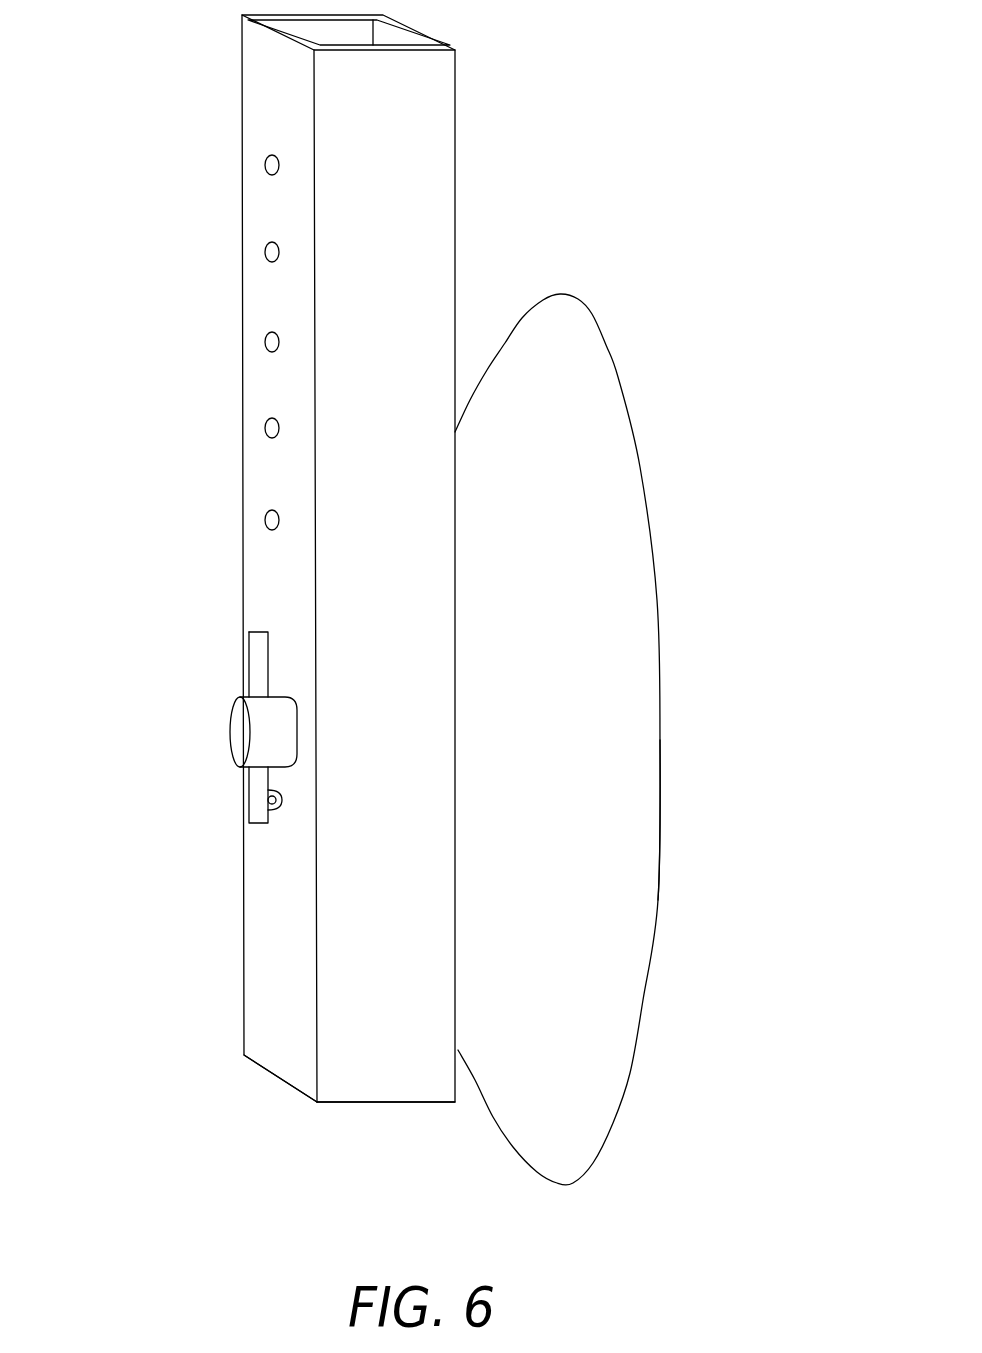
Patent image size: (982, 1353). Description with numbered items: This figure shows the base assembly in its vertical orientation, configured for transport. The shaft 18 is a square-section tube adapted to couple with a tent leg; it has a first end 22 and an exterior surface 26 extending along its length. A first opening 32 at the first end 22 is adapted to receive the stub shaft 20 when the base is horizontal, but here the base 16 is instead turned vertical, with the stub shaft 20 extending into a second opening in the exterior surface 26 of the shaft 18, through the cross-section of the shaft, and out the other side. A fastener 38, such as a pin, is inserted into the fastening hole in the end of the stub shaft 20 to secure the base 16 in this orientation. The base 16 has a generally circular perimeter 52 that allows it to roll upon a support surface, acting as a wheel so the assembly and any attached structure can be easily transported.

The shaft 18 is at (245, 100).
The base 16 is at (600, 398).
The generally circular perimeter 52 is at (660, 845).
The fastener 38 is at (263, 635).
The stub shaft 20 is at (235, 735).
The exterior surface 26 is at (268, 883).
The first end 22 is at (257, 1058).
The first opening 32 is at (335, 1110).